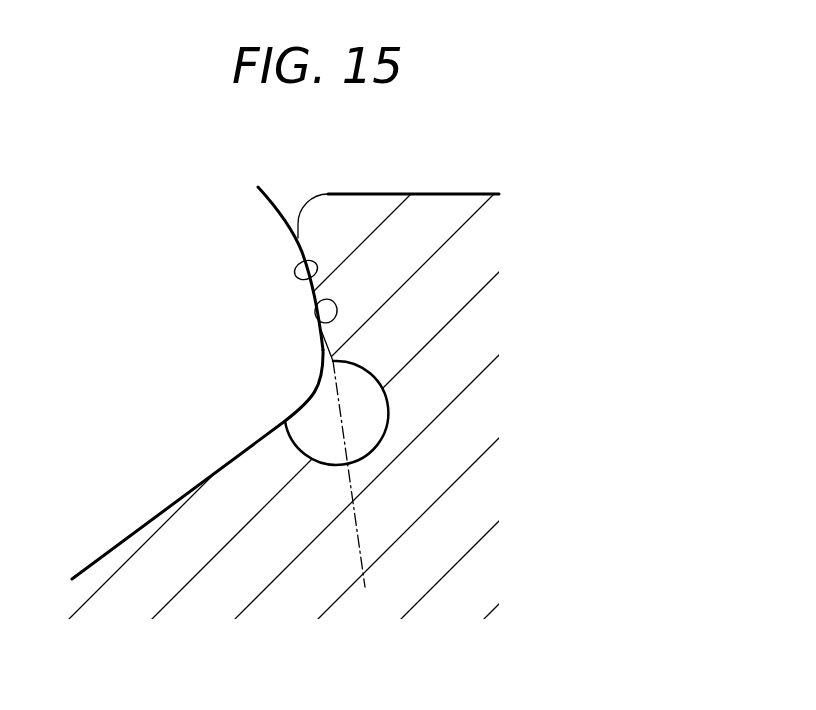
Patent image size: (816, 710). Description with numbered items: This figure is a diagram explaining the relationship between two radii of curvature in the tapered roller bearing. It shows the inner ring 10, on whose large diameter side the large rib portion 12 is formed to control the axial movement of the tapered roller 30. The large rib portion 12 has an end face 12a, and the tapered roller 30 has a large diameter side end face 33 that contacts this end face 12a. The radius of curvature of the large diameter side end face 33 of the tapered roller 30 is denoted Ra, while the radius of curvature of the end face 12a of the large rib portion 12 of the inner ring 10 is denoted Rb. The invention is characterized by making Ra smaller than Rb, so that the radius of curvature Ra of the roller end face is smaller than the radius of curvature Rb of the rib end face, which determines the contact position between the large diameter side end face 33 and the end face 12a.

The inner ring 10 is at (464, 183).
The large rib portion 12 is at (400, 222).
The end face of the large rib portion 12a is at (311, 281).
The tapered roller 30 is at (114, 563).
The large diameter side end face 33 is at (325, 321).
The radius of curvature of the large diameter side end face Ra is at (281, 243).
The radius of curvature of the end face of the large rib portion Rb is at (348, 546).